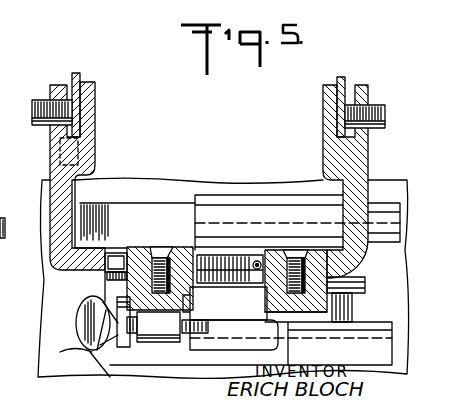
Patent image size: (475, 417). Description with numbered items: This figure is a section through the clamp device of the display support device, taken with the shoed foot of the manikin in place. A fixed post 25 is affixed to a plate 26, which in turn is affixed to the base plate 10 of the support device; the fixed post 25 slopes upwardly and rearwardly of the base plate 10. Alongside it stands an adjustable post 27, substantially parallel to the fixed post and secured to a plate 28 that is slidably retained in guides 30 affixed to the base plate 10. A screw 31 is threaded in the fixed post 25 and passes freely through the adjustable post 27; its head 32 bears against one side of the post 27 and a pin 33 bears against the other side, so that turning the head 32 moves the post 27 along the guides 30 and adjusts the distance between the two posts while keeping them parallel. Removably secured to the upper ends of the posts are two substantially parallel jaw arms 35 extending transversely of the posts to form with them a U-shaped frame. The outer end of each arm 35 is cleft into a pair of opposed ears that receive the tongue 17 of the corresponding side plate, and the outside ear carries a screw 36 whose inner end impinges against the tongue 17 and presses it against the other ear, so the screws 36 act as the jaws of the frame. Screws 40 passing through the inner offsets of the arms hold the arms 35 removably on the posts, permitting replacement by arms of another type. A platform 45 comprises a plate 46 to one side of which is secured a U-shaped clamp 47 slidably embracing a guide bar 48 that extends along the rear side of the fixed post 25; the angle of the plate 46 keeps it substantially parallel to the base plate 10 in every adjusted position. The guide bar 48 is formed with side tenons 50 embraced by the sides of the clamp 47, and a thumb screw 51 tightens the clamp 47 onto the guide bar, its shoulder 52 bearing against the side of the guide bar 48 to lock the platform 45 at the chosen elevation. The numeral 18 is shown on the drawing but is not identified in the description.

The base plate 10 is at (42, 318).
The tongue 17 is at (74, 73).
The side wall 18 is at (12, 254).
The fixed post 25 is at (107, 283).
The plate 26 is at (122, 195).
The adjustable post 27 is at (295, 308).
The plate 28 is at (358, 317).
The guides 30 is at (214, 200).
The screw 31 is at (217, 255).
The head 32 is at (365, 283).
The pin 33 is at (257, 261).
The jaw arms 35 is at (95, 158).
The screw 36 is at (38, 100).
The screws 40 is at (295, 252).
The platform 45 is at (92, 353).
The plate 46 is at (148, 345).
The U-shaped clamp 47 is at (200, 306).
The guide bar 48 is at (146, 345).
The side tenons 50 is at (185, 270).
The thumb screw 51 is at (77, 321).
The shoulder 52 is at (82, 360).